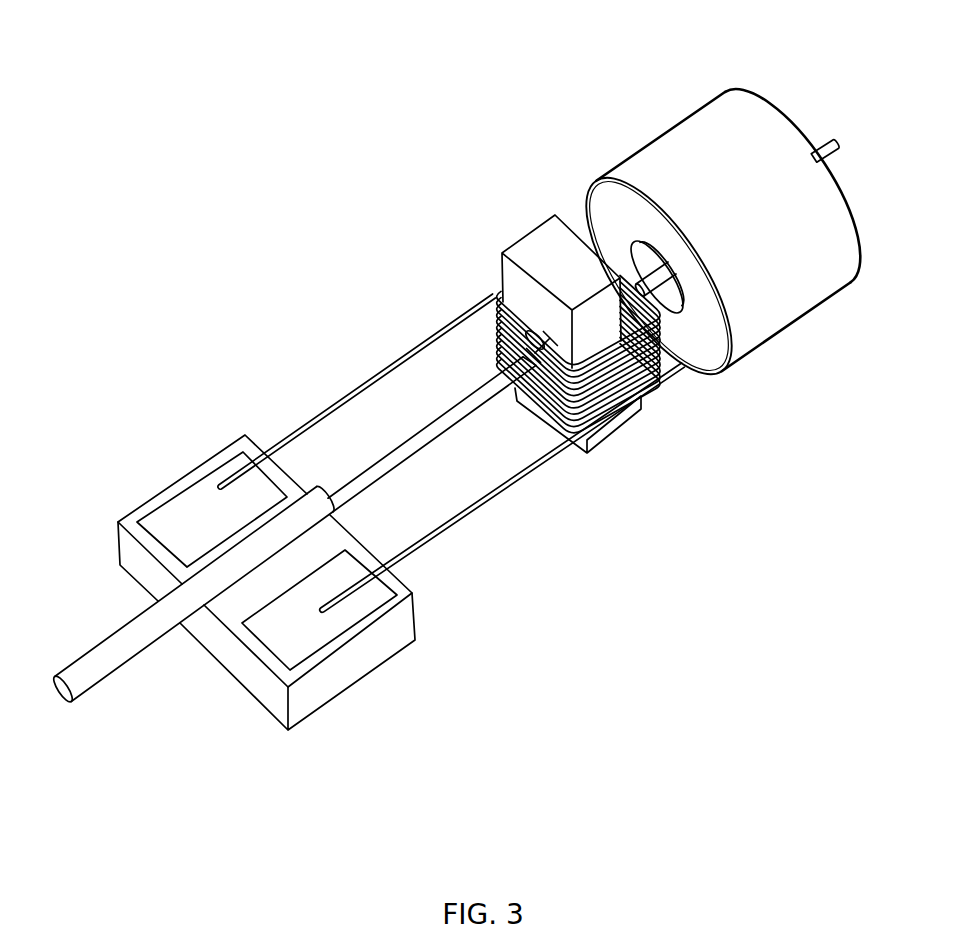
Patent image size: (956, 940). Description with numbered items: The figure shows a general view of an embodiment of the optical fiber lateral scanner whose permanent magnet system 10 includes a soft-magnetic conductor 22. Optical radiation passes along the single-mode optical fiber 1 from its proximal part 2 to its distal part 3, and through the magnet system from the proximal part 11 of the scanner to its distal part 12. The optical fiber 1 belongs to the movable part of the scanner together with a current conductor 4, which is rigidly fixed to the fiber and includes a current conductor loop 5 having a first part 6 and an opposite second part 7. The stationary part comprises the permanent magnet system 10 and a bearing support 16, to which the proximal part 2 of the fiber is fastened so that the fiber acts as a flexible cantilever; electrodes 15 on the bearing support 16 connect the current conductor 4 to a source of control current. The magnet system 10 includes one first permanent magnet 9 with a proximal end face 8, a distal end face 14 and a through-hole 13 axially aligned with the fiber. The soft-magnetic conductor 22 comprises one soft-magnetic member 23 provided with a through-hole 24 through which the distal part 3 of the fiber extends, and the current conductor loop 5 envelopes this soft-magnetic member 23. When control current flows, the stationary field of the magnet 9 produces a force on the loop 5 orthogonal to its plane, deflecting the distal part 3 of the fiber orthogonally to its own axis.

The optical fiber 1 is at (362, 483).
The proximal part 2 is at (213, 582).
The distal part 3 is at (832, 143).
The current conductor 4 is at (343, 403).
The current conductor loop 5 is at (612, 387).
The first part 6 is at (623, 273).
The second part 7 is at (540, 387).
The proximal end face 8 is at (613, 207).
The first permanent magnet 9 is at (777, 297).
The permanent magnet system 10 is at (488, 247).
The proximal part 11 is at (62, 718).
The distal part 12 is at (808, 185).
The through-hole 13 is at (667, 303).
The distal end face 14 is at (760, 103).
The electrodes 15 is at (178, 527).
The bearing support 16 is at (397, 638).
The soft-magnetic conductor 22 is at (488, 247).
The soft-magnetic member 23 is at (537, 247).
The through-hole 24 is at (492, 295).